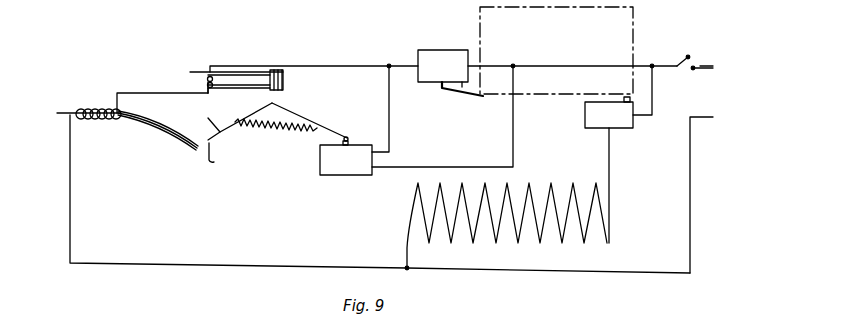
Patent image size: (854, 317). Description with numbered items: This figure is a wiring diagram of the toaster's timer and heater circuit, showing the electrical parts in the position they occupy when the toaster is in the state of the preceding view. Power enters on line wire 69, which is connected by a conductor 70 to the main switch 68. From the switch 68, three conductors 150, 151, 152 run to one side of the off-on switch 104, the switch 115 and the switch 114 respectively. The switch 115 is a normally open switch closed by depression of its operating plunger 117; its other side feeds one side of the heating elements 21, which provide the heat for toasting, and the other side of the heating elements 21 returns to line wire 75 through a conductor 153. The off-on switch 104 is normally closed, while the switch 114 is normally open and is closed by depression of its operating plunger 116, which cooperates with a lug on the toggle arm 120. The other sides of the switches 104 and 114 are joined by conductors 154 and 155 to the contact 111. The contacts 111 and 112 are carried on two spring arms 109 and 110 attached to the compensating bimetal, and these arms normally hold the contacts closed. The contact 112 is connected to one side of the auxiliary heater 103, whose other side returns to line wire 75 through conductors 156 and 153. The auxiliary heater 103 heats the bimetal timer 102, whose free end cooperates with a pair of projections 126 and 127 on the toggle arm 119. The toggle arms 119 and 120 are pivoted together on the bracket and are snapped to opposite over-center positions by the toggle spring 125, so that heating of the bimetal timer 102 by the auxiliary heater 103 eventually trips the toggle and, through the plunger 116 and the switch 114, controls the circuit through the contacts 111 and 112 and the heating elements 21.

The heating elements 21 is at (530, 187).
The switch 68 is at (680, 62).
The line wire 69 is at (707, 70).
The conductor 70 is at (711, 53).
The line wire 75 is at (698, 119).
The bimetal timer 102 is at (163, 132).
The auxiliary heater 103 is at (86, 108).
The off-on switch 104 is at (450, 73).
The spring arm 109 is at (252, 72).
The spring arm 110 is at (238, 90).
The contact 111 is at (208, 72).
The contact 112 is at (207, 83).
The switch 114 is at (346, 160).
The switch 115 is at (609, 115).
The operating plunger 116 is at (341, 137).
The operating plunger 117 is at (625, 97).
The toggle arm 119 is at (228, 122).
The toggle arm 120 is at (301, 118).
The toggle spring 125 is at (292, 131).
The projection 126 is at (208, 118).
The projection 127 is at (224, 158).
The conductor 150 is at (553, 66).
The conductor 151 is at (652, 92).
The conductor 152 is at (513, 131).
The conductor 153 is at (605, 274).
The conductor 154 is at (389, 106).
The conductor 155 is at (328, 66).
The conductor 156 is at (106, 266).